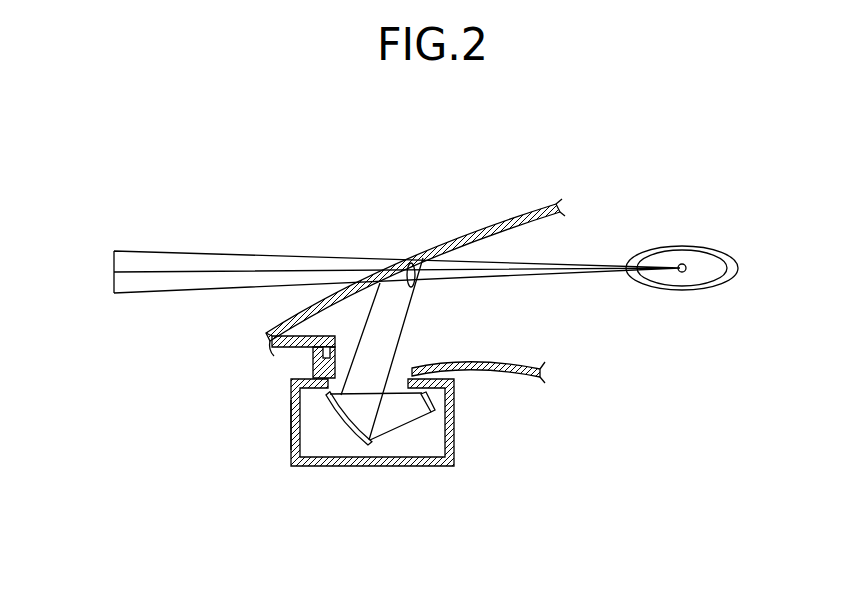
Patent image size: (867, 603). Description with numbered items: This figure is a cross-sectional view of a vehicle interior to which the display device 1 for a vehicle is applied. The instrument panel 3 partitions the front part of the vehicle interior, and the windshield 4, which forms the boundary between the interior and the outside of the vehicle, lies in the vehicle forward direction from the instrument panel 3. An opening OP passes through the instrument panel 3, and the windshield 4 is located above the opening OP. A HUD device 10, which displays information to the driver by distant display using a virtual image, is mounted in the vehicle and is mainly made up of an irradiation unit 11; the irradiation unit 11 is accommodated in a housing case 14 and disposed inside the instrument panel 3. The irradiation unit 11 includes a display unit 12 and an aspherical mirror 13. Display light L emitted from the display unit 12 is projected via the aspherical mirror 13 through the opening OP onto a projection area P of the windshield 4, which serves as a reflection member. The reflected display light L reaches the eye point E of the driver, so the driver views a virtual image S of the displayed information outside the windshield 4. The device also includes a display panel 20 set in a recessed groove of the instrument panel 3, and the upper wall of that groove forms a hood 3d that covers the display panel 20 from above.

The display device for a vehicle 1 is at (534, 324).
The instrument panel 3 is at (507, 362).
The hood 3d is at (335, 352).
The windshield 4 is at (515, 207).
The HUD device 10 is at (372, 474).
The irradiation unit 11 is at (425, 433).
The display unit 12 is at (435, 413).
The aspherical mirror 13 is at (343, 421).
The housing case 14 is at (290, 417).
The display panel 20 is at (340, 352).
The virtual image S is at (114, 251).
The eye point E is at (684, 263).
The projection area P is at (411, 262).
The opening OP is at (404, 362).
The display light L is at (402, 427).